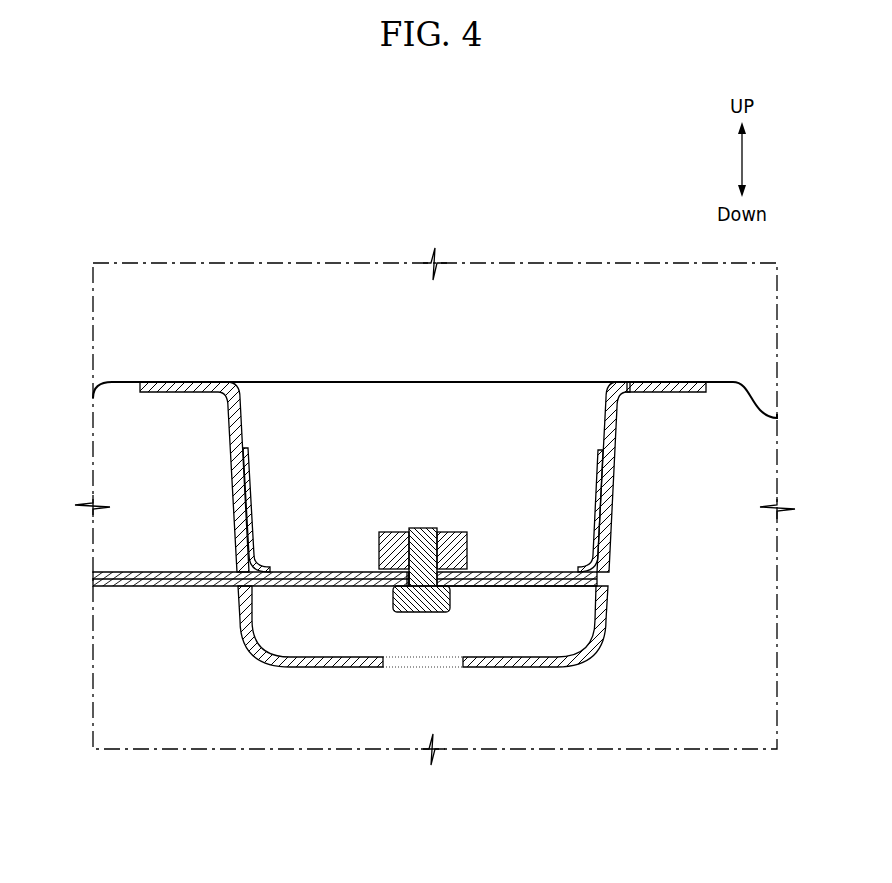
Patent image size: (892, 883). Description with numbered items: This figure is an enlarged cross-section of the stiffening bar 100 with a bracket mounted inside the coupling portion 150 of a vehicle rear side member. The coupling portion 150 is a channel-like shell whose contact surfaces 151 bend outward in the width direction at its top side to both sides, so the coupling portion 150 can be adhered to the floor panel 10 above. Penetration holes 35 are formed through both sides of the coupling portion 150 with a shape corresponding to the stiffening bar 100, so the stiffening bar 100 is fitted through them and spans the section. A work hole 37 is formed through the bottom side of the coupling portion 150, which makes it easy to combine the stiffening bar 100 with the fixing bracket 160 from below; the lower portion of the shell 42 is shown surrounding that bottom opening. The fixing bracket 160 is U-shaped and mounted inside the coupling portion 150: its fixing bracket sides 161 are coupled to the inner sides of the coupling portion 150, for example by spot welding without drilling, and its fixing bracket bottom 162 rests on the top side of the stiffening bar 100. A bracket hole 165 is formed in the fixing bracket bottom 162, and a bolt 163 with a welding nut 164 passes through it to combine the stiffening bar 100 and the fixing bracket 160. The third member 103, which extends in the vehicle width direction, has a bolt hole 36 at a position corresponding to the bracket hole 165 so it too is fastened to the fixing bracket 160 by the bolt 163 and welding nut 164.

The floor panel 10 is at (663, 310).
The penetration holes 35 is at (238, 588).
The bolt hole 36 is at (388, 585).
The work hole 37 is at (420, 663).
The lower casing 42 is at (456, 651).
The stiffening bar 100 is at (396, 582).
The third member 103 is at (602, 560).
The coupling portion 150 is at (547, 374).
The contact surfaces 151 is at (620, 392).
The fixing bracket 160 is at (256, 536).
The fixing bracket sides 161 is at (596, 505).
The fixing bracket bottom 162 is at (540, 587).
The bolt 163 is at (427, 604).
The welding nut 164 is at (450, 540).
The bracket hole 165 is at (450, 586).